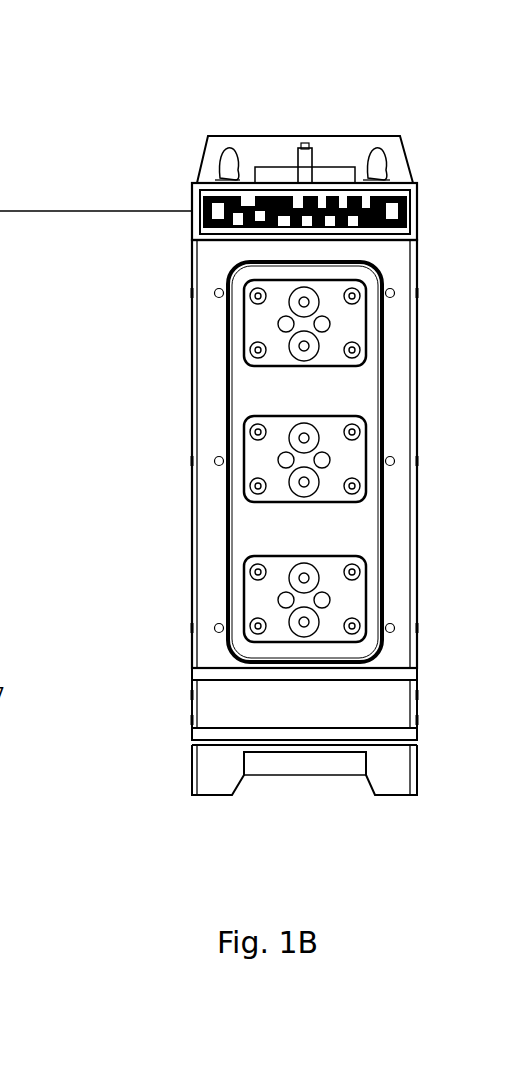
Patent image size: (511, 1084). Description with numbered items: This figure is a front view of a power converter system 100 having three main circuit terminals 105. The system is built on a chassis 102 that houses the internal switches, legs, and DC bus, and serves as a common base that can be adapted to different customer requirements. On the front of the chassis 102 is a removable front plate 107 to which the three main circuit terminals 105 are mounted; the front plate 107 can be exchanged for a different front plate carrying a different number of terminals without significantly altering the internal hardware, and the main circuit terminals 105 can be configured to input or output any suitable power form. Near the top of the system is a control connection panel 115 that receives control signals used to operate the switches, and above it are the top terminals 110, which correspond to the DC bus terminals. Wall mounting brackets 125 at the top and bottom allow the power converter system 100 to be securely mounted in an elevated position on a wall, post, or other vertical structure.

The power converter system 100 is at (428, 101).
The chassis 102 is at (388, 493).
The main circuit terminals 105 is at (260, 594).
The front plate 107 is at (357, 393).
The top terminals 110 is at (305, 135).
The control connection panel 115 is at (192, 208).
The wall mounting brackets 125 is at (218, 136).